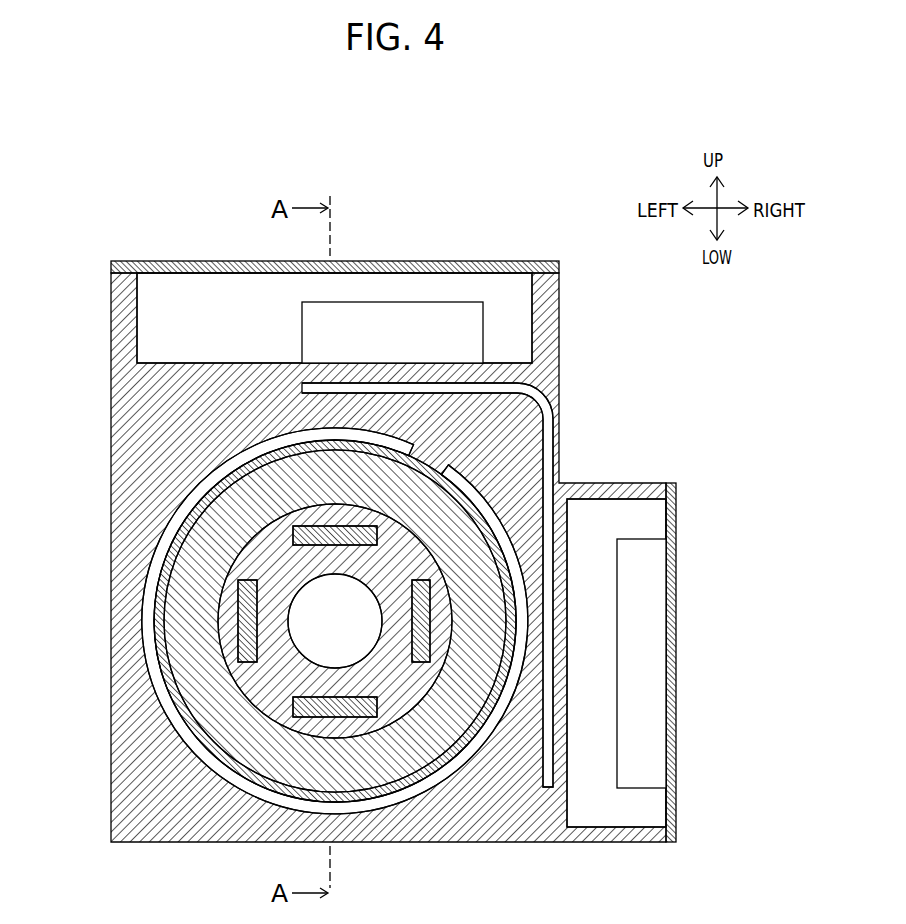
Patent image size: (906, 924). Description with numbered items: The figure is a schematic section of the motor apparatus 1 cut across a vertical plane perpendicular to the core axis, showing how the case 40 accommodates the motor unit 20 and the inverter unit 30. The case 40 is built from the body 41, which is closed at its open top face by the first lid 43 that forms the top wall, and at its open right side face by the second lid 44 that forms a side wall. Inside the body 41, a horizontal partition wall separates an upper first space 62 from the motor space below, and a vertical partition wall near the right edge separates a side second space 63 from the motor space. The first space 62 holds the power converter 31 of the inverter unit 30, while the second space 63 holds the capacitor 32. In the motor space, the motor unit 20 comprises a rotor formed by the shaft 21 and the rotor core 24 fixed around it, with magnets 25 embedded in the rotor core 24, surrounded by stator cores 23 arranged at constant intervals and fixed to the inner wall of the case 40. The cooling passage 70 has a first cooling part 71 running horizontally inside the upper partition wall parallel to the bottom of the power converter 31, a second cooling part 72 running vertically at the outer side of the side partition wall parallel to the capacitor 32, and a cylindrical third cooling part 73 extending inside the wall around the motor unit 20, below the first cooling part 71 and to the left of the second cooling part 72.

The motor apparatus 1 is at (520, 210).
The motor unit 20 is at (428, 782).
The shaft 21 is at (310, 650).
The stator core 23 is at (183, 587).
The rotor core 24 is at (257, 552).
The magnet 25 is at (236, 612).
The inverter unit 30 is at (532, 501).
The power converter 31 is at (399, 301).
The capacitor 32 is at (610, 632).
The case 40 is at (571, 369).
The body 41 is at (108, 410).
The first lid 43 is at (172, 261).
The second lid 44 is at (677, 547).
The first space 62 is at (150, 303).
The second space 63 is at (640, 517).
The cooling passage 70 is at (453, 555).
The first cooling part 71 is at (452, 388).
The second cooling part 72 is at (550, 708).
The third cooling part 73 is at (401, 800).